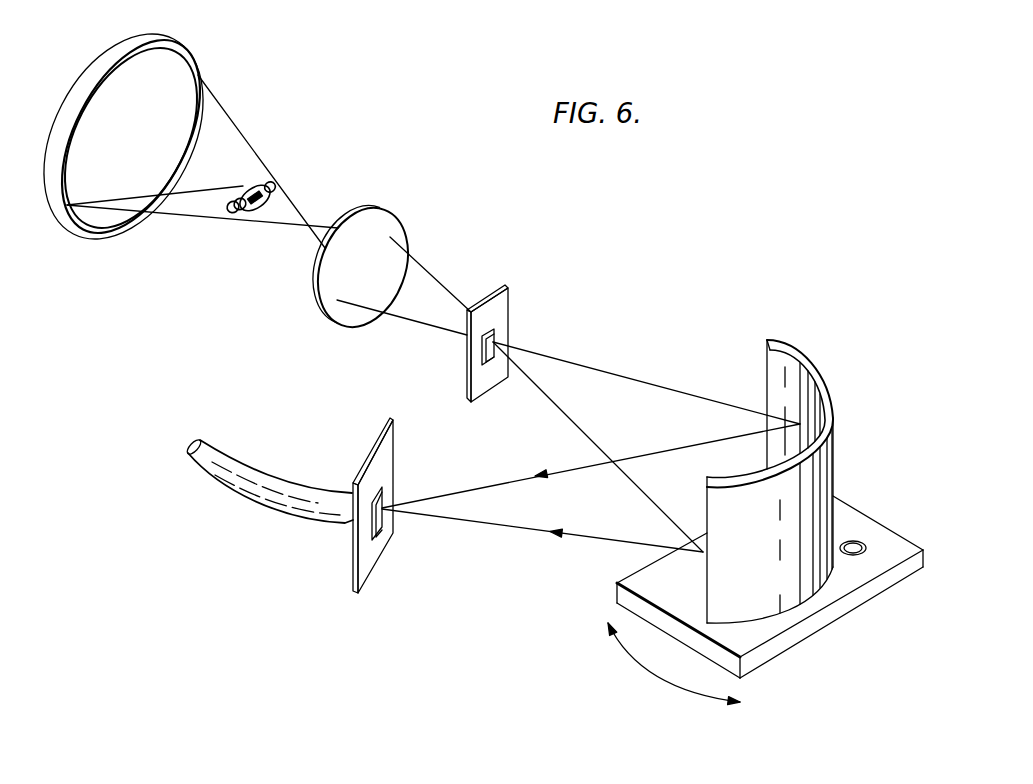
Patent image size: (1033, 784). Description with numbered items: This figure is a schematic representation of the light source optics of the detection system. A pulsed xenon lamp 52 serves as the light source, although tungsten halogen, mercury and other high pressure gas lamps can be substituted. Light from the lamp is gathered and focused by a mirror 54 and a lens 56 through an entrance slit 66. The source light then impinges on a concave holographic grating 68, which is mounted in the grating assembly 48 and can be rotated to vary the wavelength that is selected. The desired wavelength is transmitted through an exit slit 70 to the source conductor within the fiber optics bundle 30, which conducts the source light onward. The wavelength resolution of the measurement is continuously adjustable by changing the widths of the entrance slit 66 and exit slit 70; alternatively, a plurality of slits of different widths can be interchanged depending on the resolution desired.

The mirror 54 is at (218, 59).
The pulsed xenon lamp 52 is at (258, 176).
The lens 56 is at (416, 216).
The entrance slit 66 is at (520, 306).
The grating assembly 48 is at (700, 356).
The concave holographic grating 68 is at (791, 332).
The fiber optics bundle 30 is at (248, 472).
The exit slit 70 is at (340, 545).